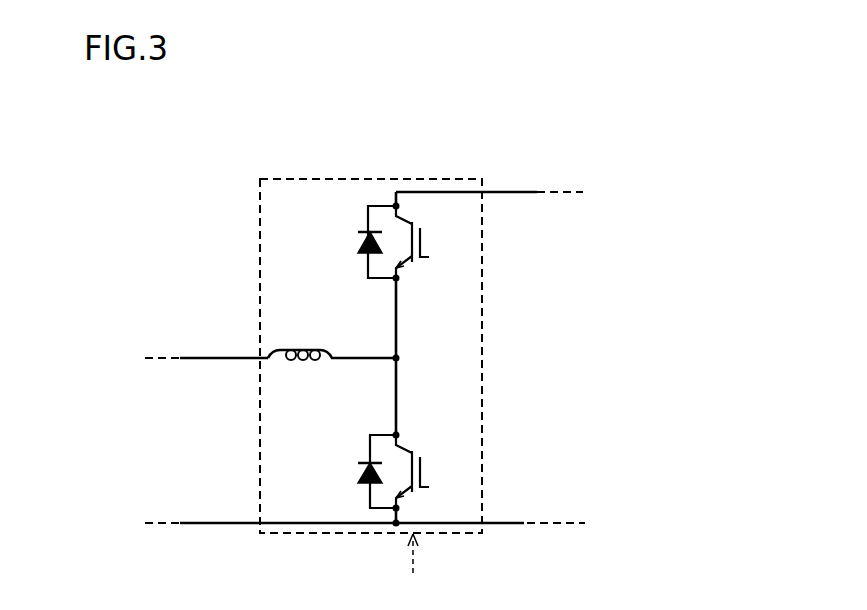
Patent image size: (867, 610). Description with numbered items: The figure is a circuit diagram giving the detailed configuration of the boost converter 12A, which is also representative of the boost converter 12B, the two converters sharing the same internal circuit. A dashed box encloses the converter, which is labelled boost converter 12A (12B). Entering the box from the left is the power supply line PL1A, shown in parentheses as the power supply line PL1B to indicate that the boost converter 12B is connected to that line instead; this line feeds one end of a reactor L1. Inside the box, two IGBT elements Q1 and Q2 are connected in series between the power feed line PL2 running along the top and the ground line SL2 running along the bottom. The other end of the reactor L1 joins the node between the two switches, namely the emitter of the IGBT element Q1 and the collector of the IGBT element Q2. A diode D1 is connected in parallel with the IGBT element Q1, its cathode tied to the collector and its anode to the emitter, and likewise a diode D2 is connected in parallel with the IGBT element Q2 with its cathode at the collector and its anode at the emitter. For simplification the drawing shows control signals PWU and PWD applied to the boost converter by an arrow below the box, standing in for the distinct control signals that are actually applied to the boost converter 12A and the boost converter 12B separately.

The boost converter 12A is at (332, 316).
The boost converter 12B is at (260, 176).
The power feed line PL2 is at (522, 191).
The power supply line PL1A is at (206, 315).
The power supply line PL1B is at (210, 356).
The reactor L1 is at (334, 339).
The IGBT element Q1 is at (428, 242).
The diode D1 is at (358, 242).
The IGBT element Q2 is at (428, 472).
The diode D2 is at (358, 471).
The ground line SL2 is at (210, 521).
The control signal PWU is at (412, 565).
The control signal PWD is at (412, 565).